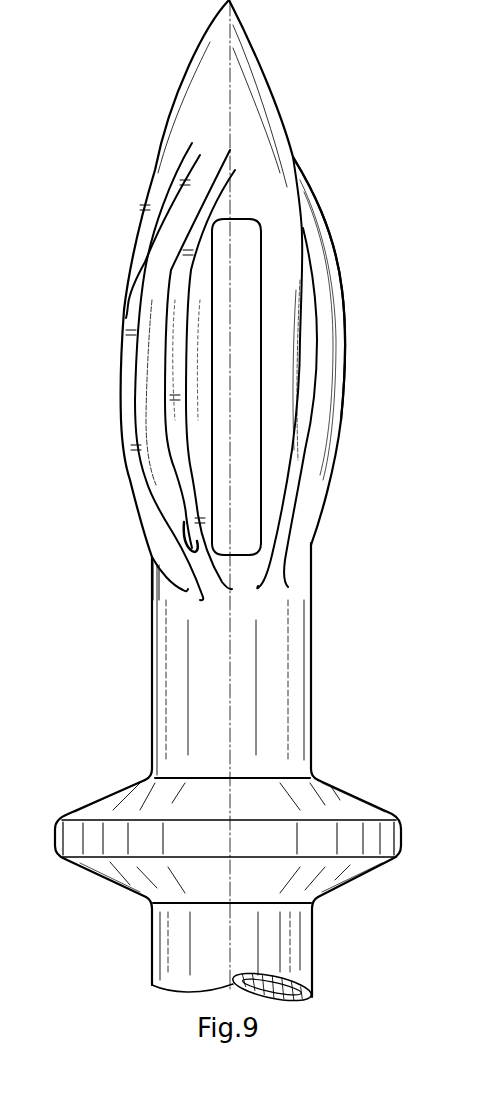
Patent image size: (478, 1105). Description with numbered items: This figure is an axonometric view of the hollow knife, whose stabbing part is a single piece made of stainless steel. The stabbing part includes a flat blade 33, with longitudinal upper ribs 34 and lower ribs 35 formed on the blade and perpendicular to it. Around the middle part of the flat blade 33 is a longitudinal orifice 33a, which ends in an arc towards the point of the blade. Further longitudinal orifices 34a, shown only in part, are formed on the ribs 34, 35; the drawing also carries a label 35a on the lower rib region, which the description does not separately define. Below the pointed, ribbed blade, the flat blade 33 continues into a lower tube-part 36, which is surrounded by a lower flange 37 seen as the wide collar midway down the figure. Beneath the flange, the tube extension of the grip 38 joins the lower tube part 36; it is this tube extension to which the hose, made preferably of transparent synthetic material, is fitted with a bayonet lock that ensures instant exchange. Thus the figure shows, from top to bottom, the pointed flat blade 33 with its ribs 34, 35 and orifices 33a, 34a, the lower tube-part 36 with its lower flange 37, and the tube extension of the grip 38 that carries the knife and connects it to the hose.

The flat blade 33 is at (278, 463).
The longitudinal orifice 33a is at (188, 545).
The upper ribs 34 is at (200, 313).
The longitudinal orifices 34a is at (240, 453).
The lower ribs 35 is at (323, 278).
The inner wing surface 35a is at (312, 337).
The lower tube-part 36 is at (278, 648).
The lower flange 37 is at (313, 830).
The tube extension of the grip 38 is at (292, 943).